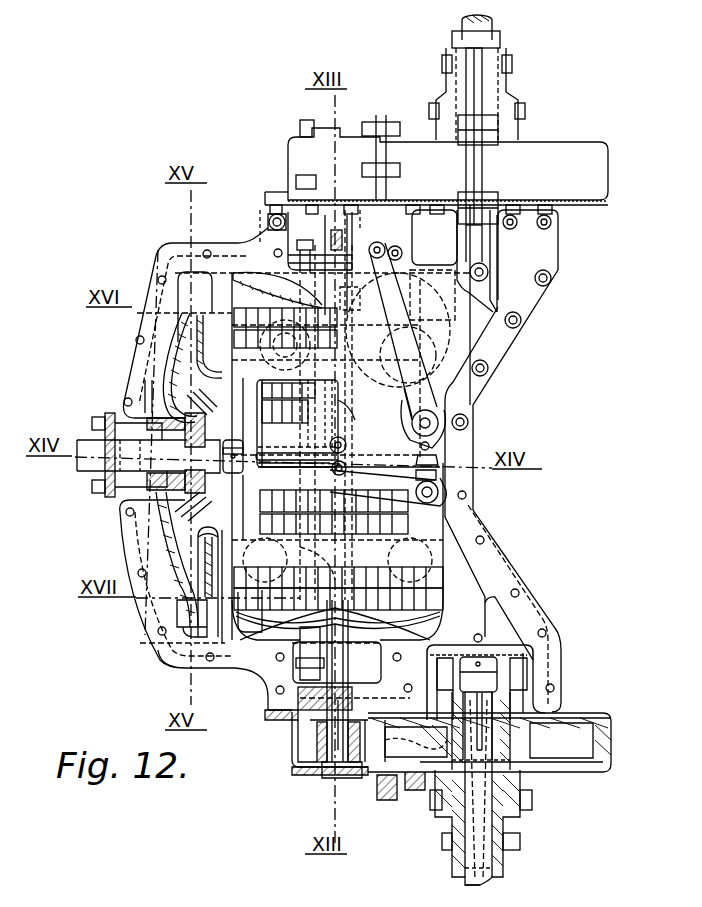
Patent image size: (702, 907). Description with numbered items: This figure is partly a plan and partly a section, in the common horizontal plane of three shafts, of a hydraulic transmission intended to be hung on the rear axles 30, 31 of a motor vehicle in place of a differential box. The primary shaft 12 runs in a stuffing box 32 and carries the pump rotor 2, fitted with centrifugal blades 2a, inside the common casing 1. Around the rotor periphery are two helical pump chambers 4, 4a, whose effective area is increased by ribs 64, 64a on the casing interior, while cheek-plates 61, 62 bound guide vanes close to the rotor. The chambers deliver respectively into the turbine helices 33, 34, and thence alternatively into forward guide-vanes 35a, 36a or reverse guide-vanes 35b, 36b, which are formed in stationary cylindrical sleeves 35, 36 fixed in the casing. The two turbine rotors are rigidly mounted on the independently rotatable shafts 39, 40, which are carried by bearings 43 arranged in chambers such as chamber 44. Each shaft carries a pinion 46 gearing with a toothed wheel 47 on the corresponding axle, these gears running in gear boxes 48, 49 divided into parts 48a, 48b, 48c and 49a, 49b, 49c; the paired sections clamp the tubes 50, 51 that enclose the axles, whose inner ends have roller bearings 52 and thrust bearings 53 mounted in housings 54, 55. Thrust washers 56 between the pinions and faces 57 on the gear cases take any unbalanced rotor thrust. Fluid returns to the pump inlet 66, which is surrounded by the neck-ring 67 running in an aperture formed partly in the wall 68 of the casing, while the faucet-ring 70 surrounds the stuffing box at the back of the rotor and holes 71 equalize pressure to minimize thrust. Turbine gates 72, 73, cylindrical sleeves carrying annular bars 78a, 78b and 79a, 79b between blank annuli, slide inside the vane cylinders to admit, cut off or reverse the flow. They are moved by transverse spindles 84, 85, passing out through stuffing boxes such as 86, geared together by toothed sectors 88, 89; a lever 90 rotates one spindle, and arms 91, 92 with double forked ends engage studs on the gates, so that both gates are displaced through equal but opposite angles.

The casing 1 is at (166, 258).
The pump rotor 2 is at (180, 380).
The blades 2a is at (92, 610).
The helical chamber 4 is at (200, 282).
The helical chamber 4a is at (205, 635).
The primary shaft 12 is at (132, 455).
The road axle 30 is at (462, 26).
The road axle 31 is at (481, 788).
The stuffing box 32 is at (145, 493).
The helical chamber 33 is at (195, 297).
The helical chamber 34 is at (440, 610).
The cylindrical sleeve 35 is at (248, 285).
The forward guide-vanes 35a is at (200, 313).
The reverse guide-vanes 35b is at (205, 338).
The cylindrical sleeve 36 is at (338, 574).
The forward guide-vanes 36a is at (246, 632).
The reverse guide-vanes 36b is at (436, 578).
The shaft 39 is at (328, 292).
The shaft 40 is at (337, 681).
The bearings 43 is at (325, 698).
The chamber 44 is at (320, 242).
The pinion 46 is at (317, 740).
The toothed wheel 47 is at (416, 750).
The gear box 48 is at (540, 143).
The gear box part 48a is at (334, 168).
The gear box part 48b is at (424, 171).
The gear box part 48c is at (548, 171).
The gear box 49 is at (612, 745).
The gear box part 49a is at (297, 768).
The gear box part 49b is at (412, 790).
The gear box part 49c is at (580, 772).
The tube 50 is at (500, 40).
The tube 51 is at (494, 878).
The roller bearings 52 is at (520, 680).
The thrust bearing 53 is at (500, 766).
The housing 54 is at (528, 255).
The housing 55 is at (503, 628).
The thrust washers 56 is at (378, 780).
The faces 57 is at (323, 768).
The cheek-plate 61 is at (205, 628).
The cheek-plate 62 is at (198, 618).
The rib 64 is at (180, 362).
The rib 64a is at (185, 600).
The pump inlet 66 is at (214, 453).
The neck-ring 67 is at (218, 530).
The wall 68 is at (228, 352).
The faucet-ring 70 is at (160, 500).
The holes 71 is at (200, 466).
The turbine gate 72 is at (256, 430).
The turbine gate 73 is at (258, 510).
The annular bars 78a is at (288, 391).
The annular bars 78b is at (285, 411).
The annular bars 79a is at (334, 524).
The annular bars 79b is at (334, 501).
The spindle 84 is at (440, 420).
The spindle 85 is at (438, 497).
The stuffing box 86 is at (406, 426).
The toothed sector 88 is at (442, 452).
The toothed sector 89 is at (442, 476).
The lever 90 is at (400, 344).
The arm 91 is at (350, 454).
The arm 92 is at (351, 479).